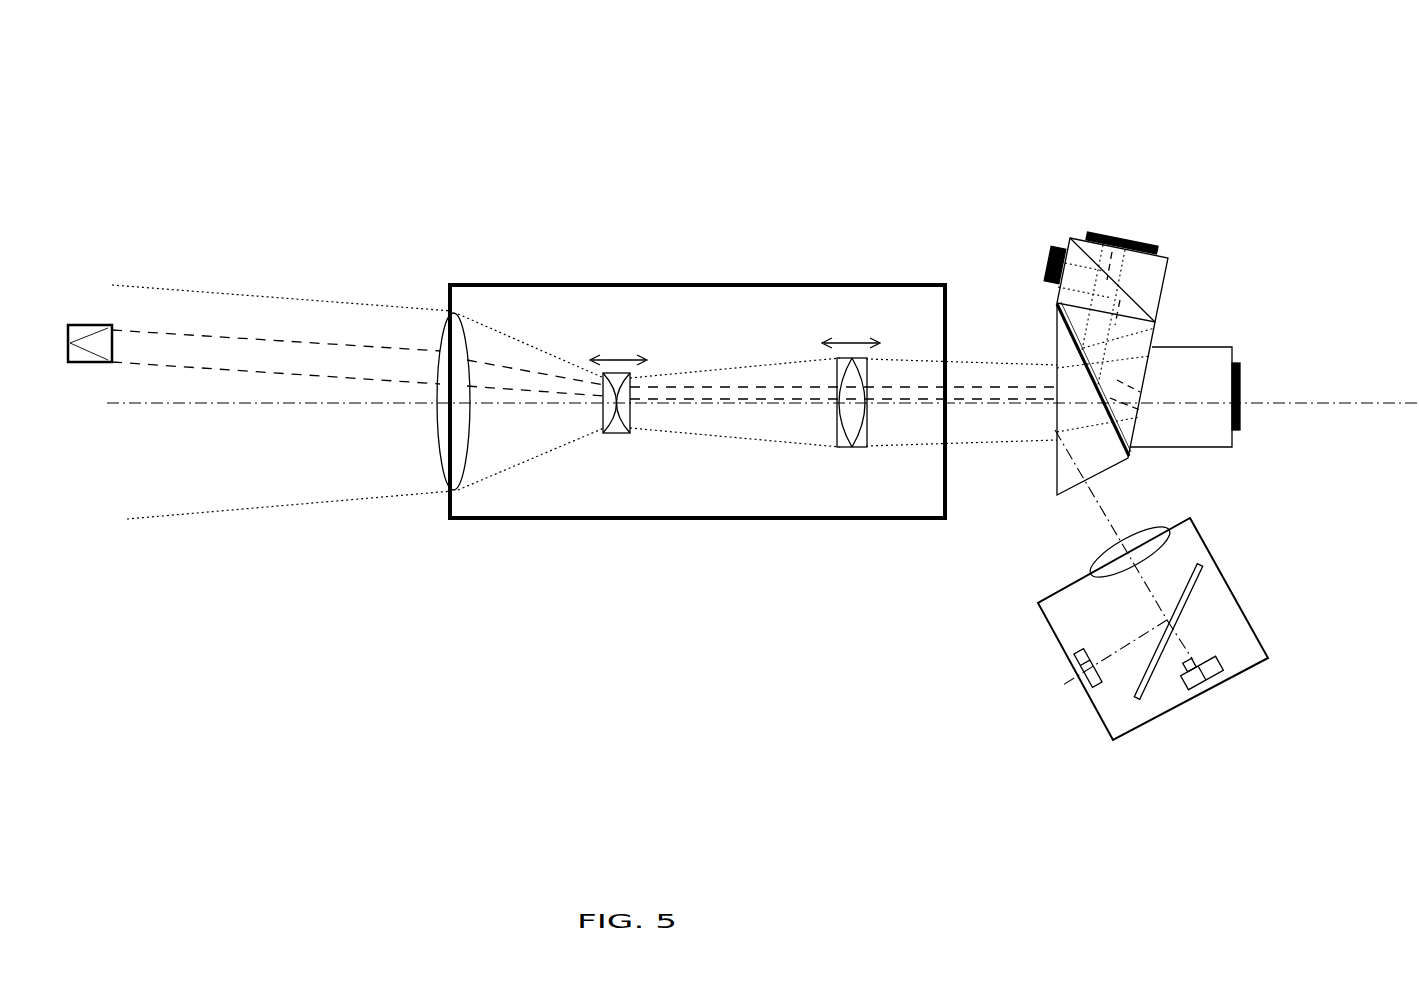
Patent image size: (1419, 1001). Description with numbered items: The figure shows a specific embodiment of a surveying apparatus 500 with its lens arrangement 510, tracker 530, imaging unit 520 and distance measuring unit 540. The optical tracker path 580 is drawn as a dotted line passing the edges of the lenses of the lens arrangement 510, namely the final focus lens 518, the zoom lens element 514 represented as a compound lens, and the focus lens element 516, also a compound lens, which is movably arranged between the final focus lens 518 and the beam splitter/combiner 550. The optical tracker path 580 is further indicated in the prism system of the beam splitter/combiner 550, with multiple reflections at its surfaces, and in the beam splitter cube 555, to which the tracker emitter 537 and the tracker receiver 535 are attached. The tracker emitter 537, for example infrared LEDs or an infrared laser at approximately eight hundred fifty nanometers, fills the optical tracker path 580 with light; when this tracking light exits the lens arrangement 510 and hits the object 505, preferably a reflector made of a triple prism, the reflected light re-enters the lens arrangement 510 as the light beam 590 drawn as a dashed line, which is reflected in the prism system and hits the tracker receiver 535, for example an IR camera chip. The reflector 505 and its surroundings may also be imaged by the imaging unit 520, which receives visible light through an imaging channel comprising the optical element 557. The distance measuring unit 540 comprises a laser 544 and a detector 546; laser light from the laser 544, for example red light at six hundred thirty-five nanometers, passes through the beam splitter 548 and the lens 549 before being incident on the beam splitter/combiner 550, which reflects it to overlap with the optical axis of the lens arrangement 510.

The surveying apparatus 500 is at (690, 140).
The object 505 is at (80, 363).
The lens arrangement 510 is at (523, 285).
The zoom lens element 514 is at (618, 434).
The focus lens element 516 is at (850, 448).
The final focus lens 518 is at (443, 478).
The imaging unit 520 is at (1240, 410).
The tracker 530 is at (1118, 292).
The tracker receiver 535 is at (1129, 199).
The tracker emitter 537 is at (1042, 262).
The distance measuring unit 540 is at (1204, 610).
The laser 544 is at (1202, 698).
The detector 546 is at (1088, 698).
The beam splitter 548 is at (1200, 560).
The lens 549 is at (1165, 522).
The beam splitter/combiner 550 is at (1057, 345).
The beam splitter cube 555 is at (1170, 272).
The optical element 557 is at (1233, 348).
The optical tracker path 580 is at (172, 288).
The light beam reflected from the target 590 is at (232, 368).